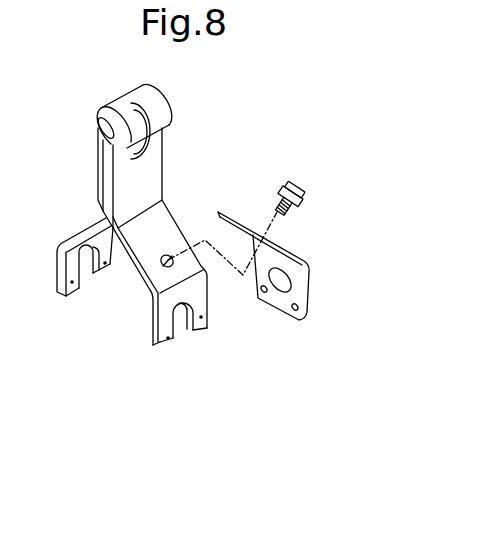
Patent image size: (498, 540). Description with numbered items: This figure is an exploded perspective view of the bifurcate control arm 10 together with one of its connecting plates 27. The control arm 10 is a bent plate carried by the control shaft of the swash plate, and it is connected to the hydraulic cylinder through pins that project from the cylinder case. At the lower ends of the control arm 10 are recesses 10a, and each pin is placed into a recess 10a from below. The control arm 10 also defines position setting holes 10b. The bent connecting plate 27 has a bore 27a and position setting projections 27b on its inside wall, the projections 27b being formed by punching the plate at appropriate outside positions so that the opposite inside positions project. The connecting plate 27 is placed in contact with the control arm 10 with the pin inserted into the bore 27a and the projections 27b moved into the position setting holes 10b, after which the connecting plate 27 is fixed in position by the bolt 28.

The control arm 10 is at (144, 253).
The recesses 10a is at (86, 277).
The position setting holes 10b is at (71, 284).
The connecting plate 27 is at (283, 308).
The bore 27a is at (283, 283).
The position setting projections 27b is at (263, 291).
The bolt 28 is at (293, 182).